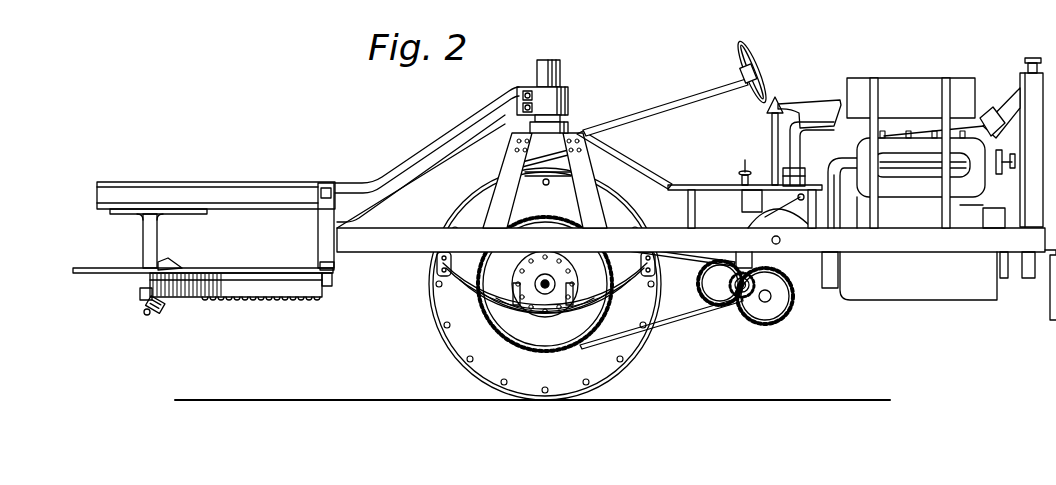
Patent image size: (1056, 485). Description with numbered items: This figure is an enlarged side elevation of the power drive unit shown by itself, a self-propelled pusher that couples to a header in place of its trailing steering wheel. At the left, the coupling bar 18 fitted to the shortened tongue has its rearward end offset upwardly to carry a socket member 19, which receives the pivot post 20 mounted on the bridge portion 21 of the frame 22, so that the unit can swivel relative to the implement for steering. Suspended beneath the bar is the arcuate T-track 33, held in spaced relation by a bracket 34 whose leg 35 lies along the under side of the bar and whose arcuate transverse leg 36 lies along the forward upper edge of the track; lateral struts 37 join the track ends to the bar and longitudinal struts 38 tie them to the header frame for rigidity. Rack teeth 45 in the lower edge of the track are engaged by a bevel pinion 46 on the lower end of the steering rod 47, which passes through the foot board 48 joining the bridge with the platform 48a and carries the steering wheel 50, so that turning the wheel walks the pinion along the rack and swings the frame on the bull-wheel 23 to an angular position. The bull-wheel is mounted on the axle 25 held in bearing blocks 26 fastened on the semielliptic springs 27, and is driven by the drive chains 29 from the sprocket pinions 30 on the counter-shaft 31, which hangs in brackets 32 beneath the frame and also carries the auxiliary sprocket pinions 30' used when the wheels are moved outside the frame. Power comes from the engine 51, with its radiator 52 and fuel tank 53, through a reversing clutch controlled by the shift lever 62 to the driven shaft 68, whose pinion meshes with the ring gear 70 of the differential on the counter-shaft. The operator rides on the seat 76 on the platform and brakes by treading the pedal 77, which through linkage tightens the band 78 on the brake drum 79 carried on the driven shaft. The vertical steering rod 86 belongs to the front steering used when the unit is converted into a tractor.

The coupling bar 18 is at (263, 182).
The socket member 19 is at (569, 98).
The pivot post 20 is at (560, 68).
The bridge portion 21 is at (590, 166).
The frame 22 is at (400, 250).
The bull-wheel 23 is at (618, 192).
The axle 25 is at (545, 272).
The bearing blocks 26 is at (567, 272).
The semielliptic springs 27 is at (606, 292).
The drive chains 29 is at (688, 330).
The sprocket pinions 30 is at (787, 305).
The auxiliary sprocket pinions 30' is at (705, 288).
The counter-shaft 31 is at (760, 283).
The brackets 32 is at (745, 256).
The T-track 33 is at (207, 276).
The bracket 34 is at (150, 238).
The leg 35 is at (128, 210).
The transverse leg 36 is at (163, 266).
The lateral struts 37 is at (346, 205).
The longitudinal struts 38 is at (88, 274).
The rack teeth 45 is at (280, 298).
The bevel pinion 46 is at (166, 312).
The steering rod 47 is at (655, 102).
The foot board 48 is at (630, 164).
The platform 48a is at (697, 186).
The steering wheel 50 is at (763, 52).
The engine 51 is at (975, 186).
The radiator 52 is at (1011, 142).
The fuel tank 53 is at (915, 82).
The shift lever 62 is at (794, 170).
The driven shaft 68 is at (772, 240).
The ring gear 70 is at (768, 318).
The seat 76 is at (816, 110).
The pedal 77 is at (746, 166).
The band 78 is at (838, 276).
The brake drum 79 is at (814, 266).
The vertical steering rod 86 is at (797, 175).